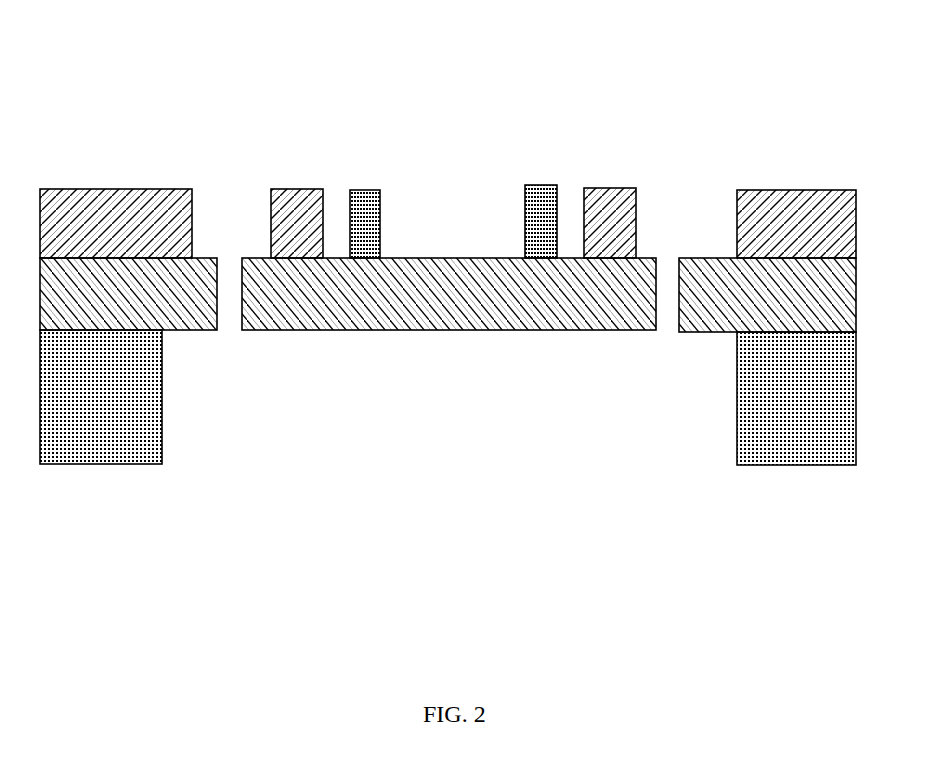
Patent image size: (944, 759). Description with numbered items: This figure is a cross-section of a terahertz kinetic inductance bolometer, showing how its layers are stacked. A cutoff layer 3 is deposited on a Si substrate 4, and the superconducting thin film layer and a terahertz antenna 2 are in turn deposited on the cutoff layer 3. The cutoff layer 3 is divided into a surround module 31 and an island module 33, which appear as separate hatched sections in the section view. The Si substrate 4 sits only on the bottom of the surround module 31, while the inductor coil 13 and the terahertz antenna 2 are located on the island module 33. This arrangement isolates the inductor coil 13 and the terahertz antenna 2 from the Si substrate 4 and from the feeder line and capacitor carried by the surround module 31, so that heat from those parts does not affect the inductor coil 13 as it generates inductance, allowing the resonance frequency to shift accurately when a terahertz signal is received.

The inductor coil 13 is at (117, 188).
The terahertz antenna 2 is at (365, 188).
The cutoff layer 3 is at (348, 465).
The surround module 31 is at (172, 310).
The island module 33 is at (447, 297).
The Si substrate 4 is at (766, 358).